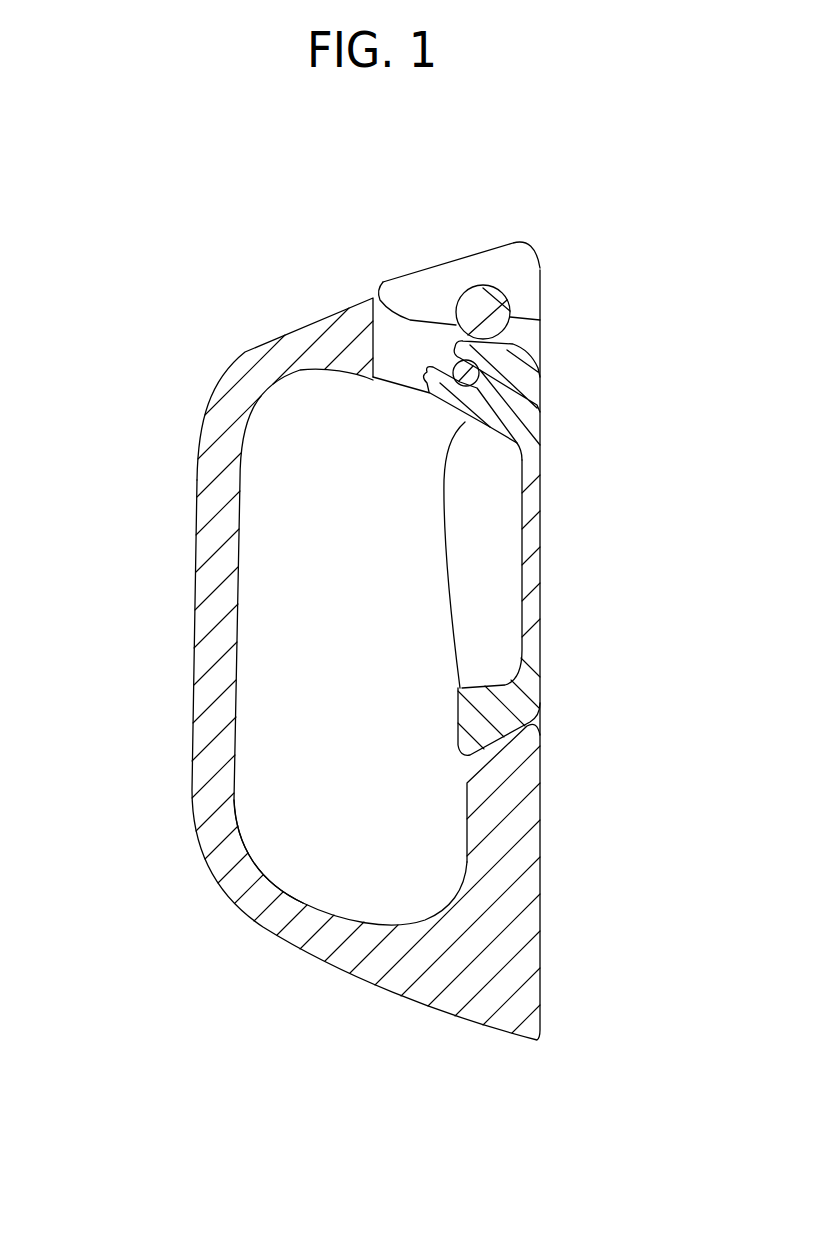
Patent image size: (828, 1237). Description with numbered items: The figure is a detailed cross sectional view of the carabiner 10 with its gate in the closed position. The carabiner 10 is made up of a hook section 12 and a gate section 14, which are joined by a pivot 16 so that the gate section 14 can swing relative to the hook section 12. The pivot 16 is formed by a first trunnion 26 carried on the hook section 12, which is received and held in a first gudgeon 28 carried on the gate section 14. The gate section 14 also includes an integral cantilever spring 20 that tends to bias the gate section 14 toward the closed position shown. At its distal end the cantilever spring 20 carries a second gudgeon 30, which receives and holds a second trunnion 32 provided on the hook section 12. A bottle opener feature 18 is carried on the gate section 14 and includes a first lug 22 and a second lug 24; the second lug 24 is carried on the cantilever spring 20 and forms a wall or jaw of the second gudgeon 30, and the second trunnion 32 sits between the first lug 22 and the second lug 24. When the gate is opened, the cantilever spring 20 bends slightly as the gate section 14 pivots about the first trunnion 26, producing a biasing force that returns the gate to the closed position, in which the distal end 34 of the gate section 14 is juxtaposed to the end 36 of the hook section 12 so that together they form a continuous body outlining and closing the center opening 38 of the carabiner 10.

The carabiner 10 is at (197, 225).
The hook section 12 is at (367, 655).
The gate section 14 is at (473, 650).
The pivot 16 is at (488, 260).
The bottle opener feature 18 is at (376, 409).
The cantilever spring 20 is at (542, 528).
The first lug 22 is at (407, 297).
The second lug 24 is at (440, 398).
The first trunnion 26 is at (473, 303).
The first gudgeon 28 is at (540, 320).
The second gudgeon 30 is at (510, 437).
The second trunnion 32 is at (478, 370).
The distal end of the gate section 34 is at (503, 737).
The end of the hook section 36 is at (483, 742).
The center opening 38 is at (305, 840).